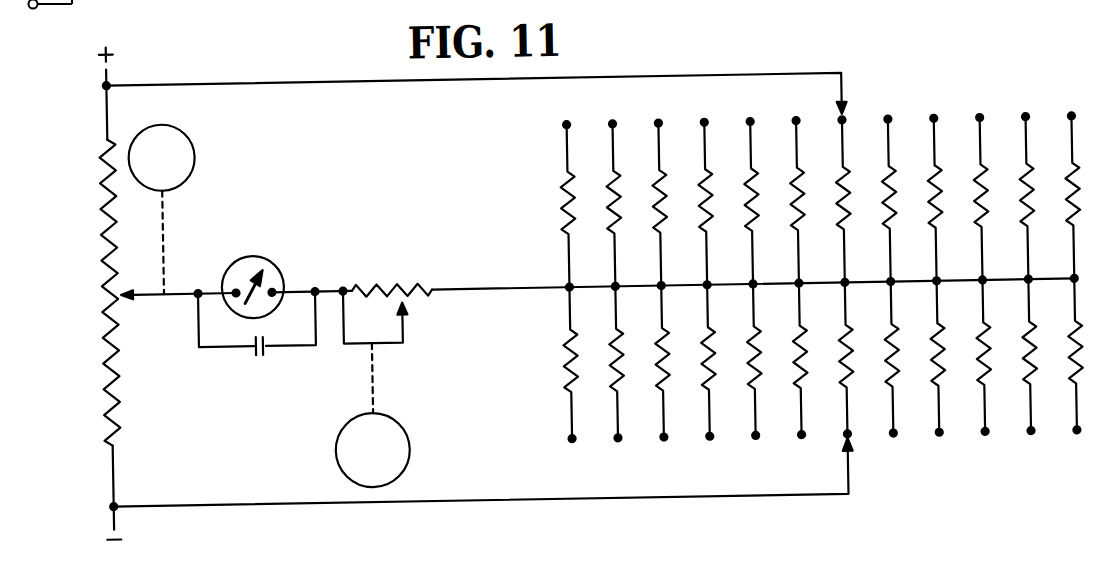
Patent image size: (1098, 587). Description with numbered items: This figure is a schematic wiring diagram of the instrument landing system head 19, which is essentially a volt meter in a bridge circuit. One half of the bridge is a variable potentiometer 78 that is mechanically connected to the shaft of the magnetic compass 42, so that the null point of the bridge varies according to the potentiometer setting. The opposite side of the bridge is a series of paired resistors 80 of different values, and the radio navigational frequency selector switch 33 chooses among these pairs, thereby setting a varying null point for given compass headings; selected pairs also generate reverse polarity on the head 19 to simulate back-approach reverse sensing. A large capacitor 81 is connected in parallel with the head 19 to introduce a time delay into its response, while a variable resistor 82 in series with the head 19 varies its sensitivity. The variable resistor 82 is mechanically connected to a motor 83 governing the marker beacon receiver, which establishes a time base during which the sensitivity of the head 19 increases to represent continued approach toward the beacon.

The instrument landing system head 19 is at (276, 261).
The radio navigational frequency selector switch 33 is at (845, 78).
The magnetic compass 42 is at (197, 160).
The variable potentiometer 78 is at (101, 266).
The paired resistors 80 is at (563, 207).
The capacitor 81 is at (260, 352).
The variable resistor 82 is at (361, 289).
The motor 83 is at (407, 446).